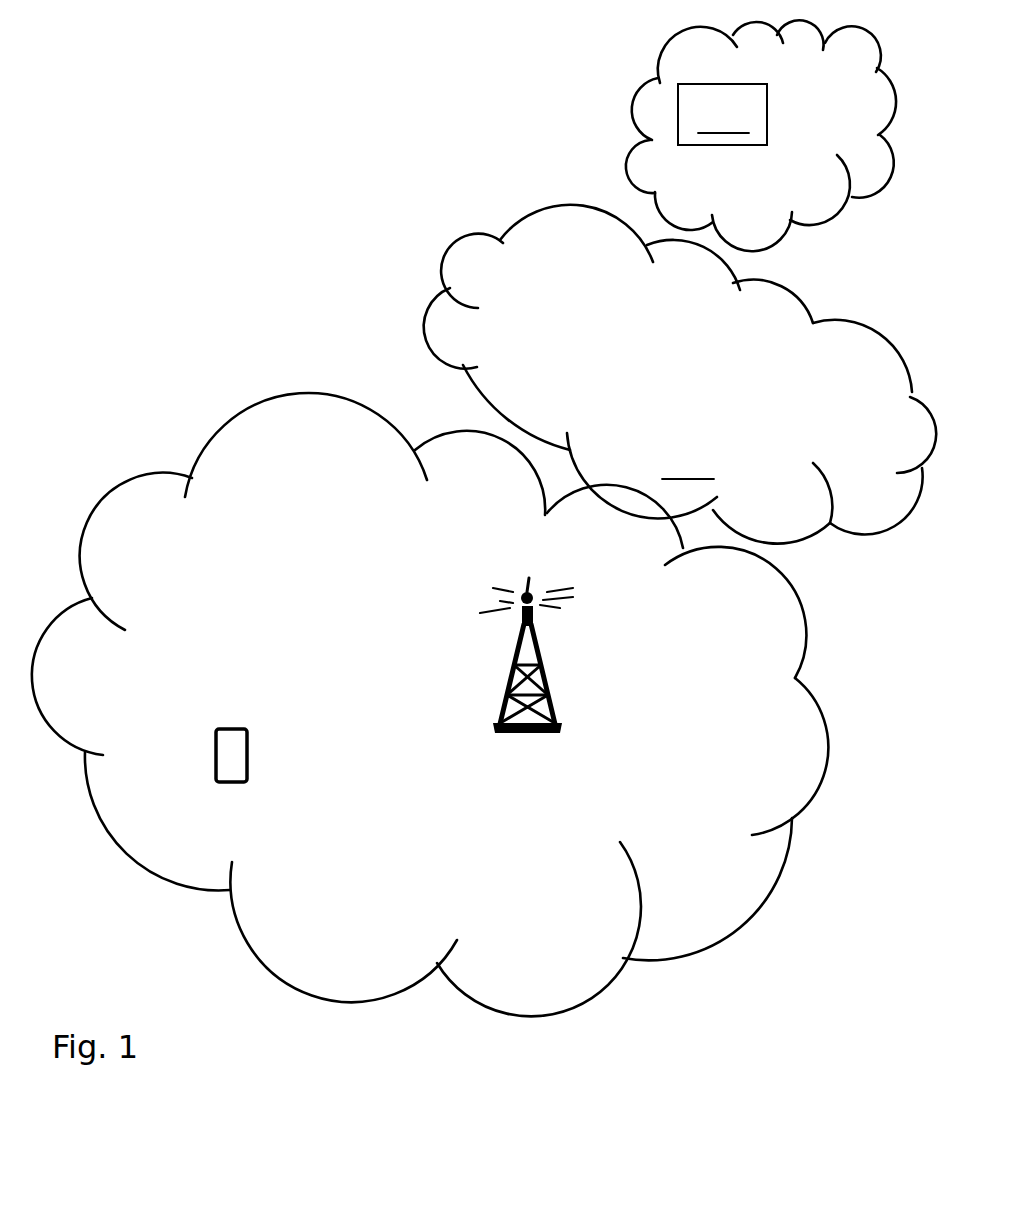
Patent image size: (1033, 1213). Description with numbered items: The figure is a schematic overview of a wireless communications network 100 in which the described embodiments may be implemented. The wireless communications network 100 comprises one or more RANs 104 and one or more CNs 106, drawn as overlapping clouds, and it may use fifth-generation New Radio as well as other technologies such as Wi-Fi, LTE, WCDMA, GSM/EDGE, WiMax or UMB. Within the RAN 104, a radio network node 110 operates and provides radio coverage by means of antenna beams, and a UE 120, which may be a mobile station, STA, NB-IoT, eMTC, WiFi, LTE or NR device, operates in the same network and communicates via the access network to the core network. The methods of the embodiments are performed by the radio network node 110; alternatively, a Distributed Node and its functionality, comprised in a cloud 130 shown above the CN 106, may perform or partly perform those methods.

The wireless communications network 100 is at (248, 226).
The RAN 104 is at (364, 504).
The CN 106 is at (799, 407).
The radio network node 110 is at (561, 655).
The UE 120 is at (274, 763).
The cloud 130 is at (843, 138).